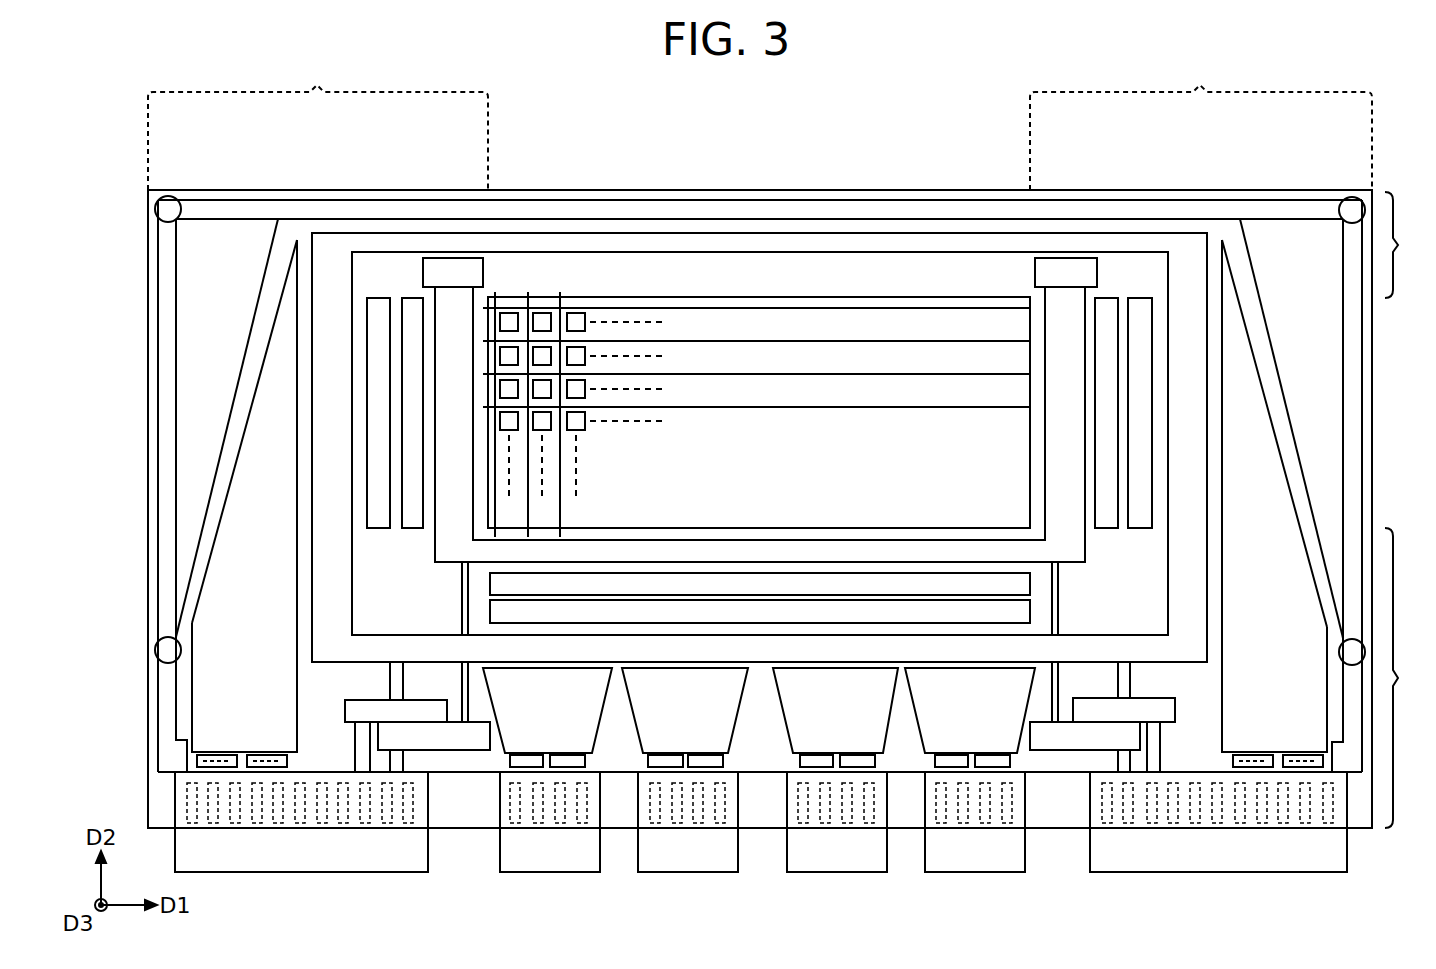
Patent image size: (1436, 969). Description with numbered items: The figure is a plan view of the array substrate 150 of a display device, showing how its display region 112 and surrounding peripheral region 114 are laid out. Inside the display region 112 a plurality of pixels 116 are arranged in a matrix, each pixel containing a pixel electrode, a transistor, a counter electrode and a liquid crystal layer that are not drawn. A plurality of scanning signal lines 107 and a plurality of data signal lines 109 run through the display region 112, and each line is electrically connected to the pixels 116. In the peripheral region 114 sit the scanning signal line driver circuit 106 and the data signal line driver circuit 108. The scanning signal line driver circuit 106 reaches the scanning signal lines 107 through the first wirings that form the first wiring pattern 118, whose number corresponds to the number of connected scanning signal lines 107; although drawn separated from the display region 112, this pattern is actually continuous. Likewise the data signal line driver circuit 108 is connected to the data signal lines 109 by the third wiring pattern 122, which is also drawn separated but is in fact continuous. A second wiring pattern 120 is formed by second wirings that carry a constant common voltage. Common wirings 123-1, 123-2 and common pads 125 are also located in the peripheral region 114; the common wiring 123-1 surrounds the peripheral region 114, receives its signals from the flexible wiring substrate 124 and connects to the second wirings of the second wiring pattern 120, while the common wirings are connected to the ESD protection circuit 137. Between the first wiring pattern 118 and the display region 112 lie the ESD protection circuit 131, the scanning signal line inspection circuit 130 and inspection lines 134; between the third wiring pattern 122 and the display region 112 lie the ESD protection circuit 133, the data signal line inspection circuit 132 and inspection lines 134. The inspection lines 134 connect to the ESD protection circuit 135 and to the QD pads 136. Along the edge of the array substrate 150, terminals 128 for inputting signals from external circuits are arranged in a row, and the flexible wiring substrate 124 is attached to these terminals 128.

The scanning signal line driver circuit 106 is at (216, 758).
The scanning signal lines 107 is at (665, 305).
The data signal line driver circuit 108 is at (670, 763).
The data signal lines 109 is at (528, 297).
The display region 112 is at (753, 297).
The peripheral region 114 is at (792, 443).
The pixels 116 is at (577, 318).
The first wiring pattern 118 is at (219, 688).
The second wiring pattern 120 is at (185, 508).
The third wiring pattern 122 is at (645, 722).
The common wiring 123-1 is at (1173, 212).
The common wiring 123-2 is at (333, 250).
The flexible wiring substrate 124 is at (326, 862).
The common pads 125 is at (1352, 197).
The terminals 128 is at (176, 795).
The scanning signal line inspection circuit 130 is at (413, 298).
The ESD protection circuit 131 is at (378, 298).
The data signal line inspection circuit 132 is at (765, 582).
The ESD protection circuit 133 is at (908, 612).
The inspection lines 134 is at (1047, 312).
The ESD protection circuit 135 is at (452, 268).
The QD pads 136 is at (478, 740).
The ESD protection circuit 137 is at (437, 712).
The array substrate 150 is at (885, 190).